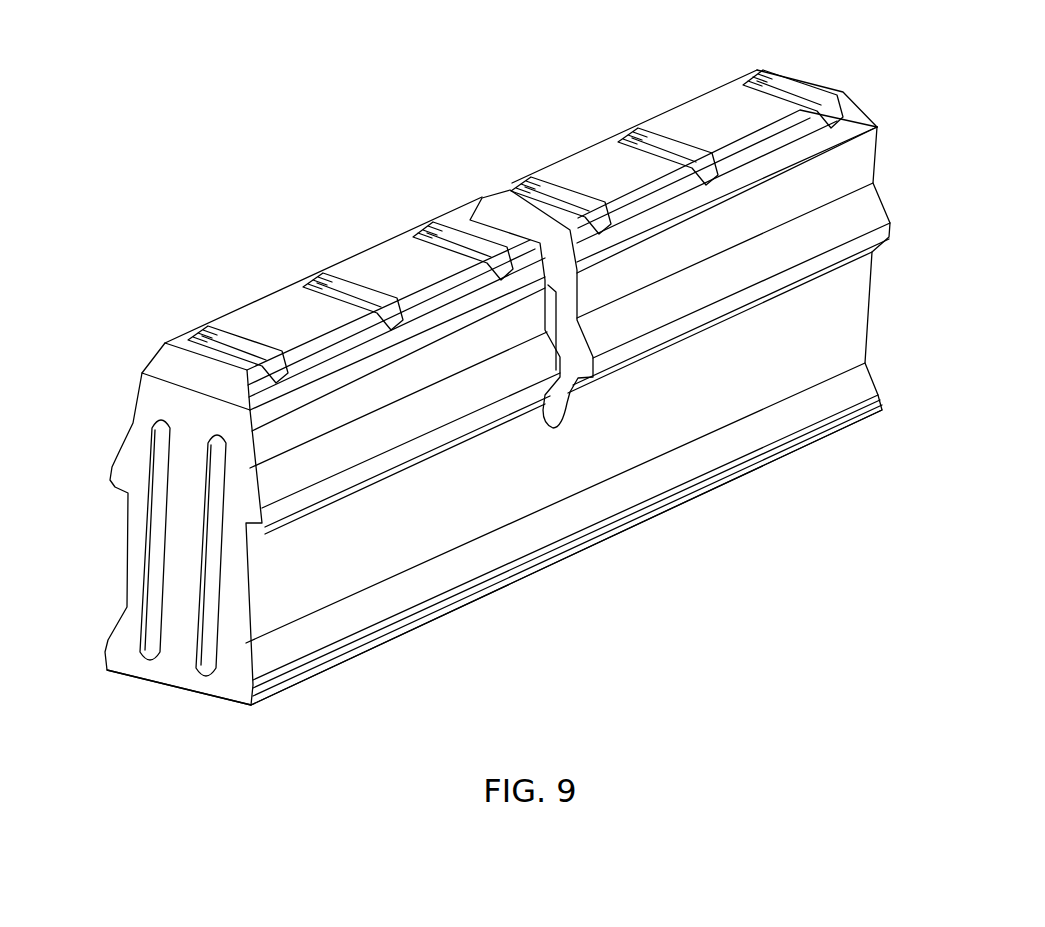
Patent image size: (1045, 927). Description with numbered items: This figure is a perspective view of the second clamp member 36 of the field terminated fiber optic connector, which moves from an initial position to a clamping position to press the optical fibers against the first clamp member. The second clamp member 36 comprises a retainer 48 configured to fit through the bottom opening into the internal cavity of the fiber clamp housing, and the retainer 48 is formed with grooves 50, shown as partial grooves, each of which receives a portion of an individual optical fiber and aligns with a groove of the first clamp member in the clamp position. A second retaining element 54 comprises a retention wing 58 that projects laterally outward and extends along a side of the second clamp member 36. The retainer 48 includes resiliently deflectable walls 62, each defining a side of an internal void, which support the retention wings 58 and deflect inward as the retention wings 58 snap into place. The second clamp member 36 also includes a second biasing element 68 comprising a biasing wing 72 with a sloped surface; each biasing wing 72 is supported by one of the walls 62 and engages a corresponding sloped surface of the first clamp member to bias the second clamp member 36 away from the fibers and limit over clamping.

The second clamp member 36 is at (385, 193).
The retainer 48 is at (490, 195).
The grooves 50 is at (230, 347).
The second retaining element 54 is at (117, 452).
The retention wing 58 is at (123, 477).
The walls 62 is at (130, 558).
The second biasing element 68 is at (120, 677).
The biasing wing 72 is at (120, 643).